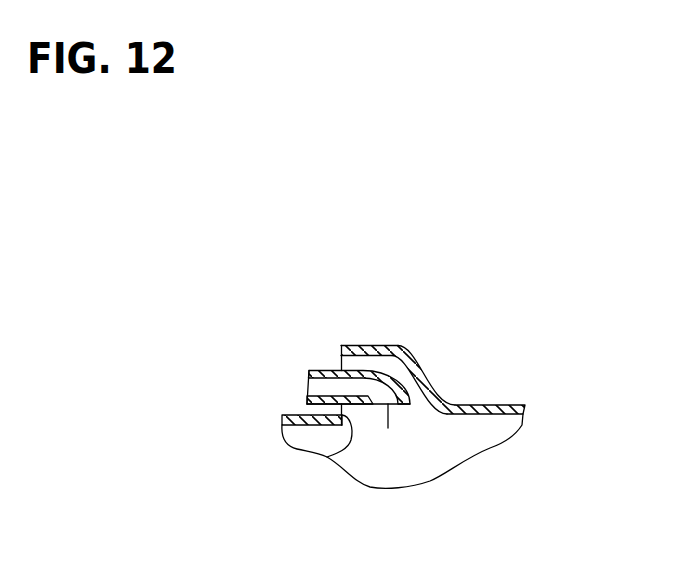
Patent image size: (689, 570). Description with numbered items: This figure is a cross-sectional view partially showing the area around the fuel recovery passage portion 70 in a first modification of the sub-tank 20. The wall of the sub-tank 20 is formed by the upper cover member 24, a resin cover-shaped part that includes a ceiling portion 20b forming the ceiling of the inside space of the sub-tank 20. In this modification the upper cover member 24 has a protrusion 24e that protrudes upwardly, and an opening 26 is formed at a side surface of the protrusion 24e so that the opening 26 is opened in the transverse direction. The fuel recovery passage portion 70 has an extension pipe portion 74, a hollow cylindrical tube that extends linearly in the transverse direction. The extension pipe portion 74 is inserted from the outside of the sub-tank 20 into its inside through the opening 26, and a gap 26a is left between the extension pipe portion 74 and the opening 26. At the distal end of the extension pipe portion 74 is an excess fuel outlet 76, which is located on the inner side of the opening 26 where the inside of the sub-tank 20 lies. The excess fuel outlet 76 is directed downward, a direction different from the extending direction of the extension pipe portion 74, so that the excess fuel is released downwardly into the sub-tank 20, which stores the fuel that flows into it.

The sub-tank 20 is at (436, 417).
The upper cover member 24 is at (495, 405).
The protrusion 24e is at (406, 346).
The opening 26 is at (340, 346).
The gap 26a is at (332, 452).
The ceiling portion 20b is at (282, 428).
The fuel recovery passage portion 70 is at (324, 356).
The extension pipe portion 74 is at (308, 370).
The excess fuel outlet 76 is at (388, 428).